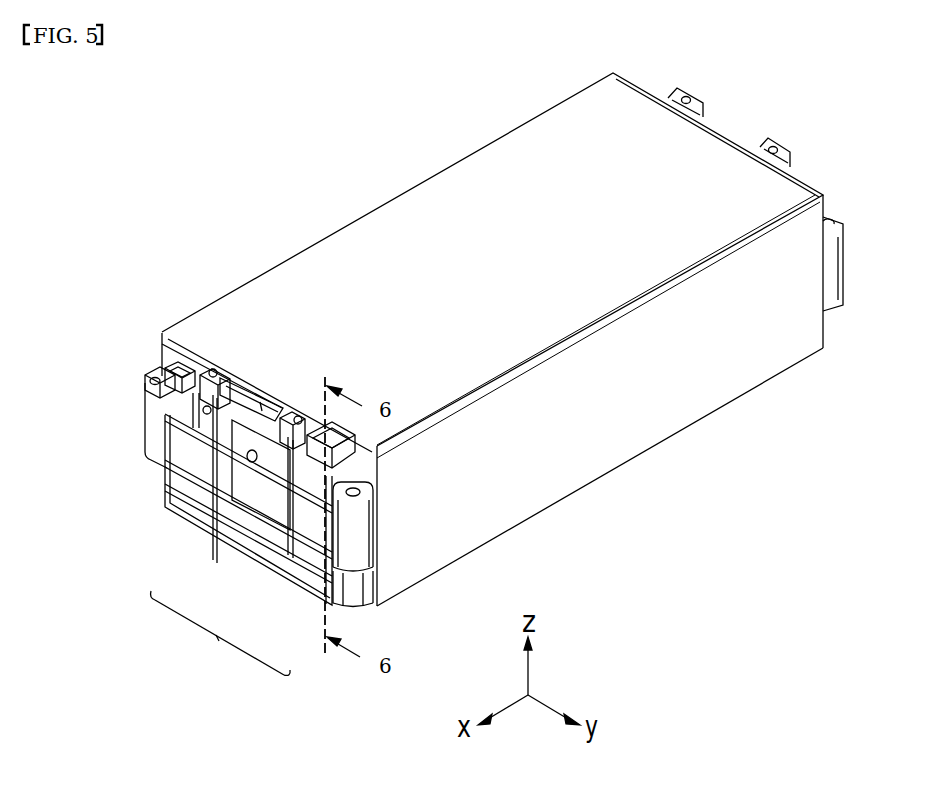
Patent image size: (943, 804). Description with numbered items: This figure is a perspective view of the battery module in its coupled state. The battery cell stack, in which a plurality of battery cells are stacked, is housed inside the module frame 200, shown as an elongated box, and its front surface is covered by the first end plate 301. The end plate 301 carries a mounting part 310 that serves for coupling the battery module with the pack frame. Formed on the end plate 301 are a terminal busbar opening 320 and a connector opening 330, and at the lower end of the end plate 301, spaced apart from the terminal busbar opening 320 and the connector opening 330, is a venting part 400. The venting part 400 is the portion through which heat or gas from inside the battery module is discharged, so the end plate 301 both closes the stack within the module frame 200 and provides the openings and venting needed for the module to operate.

The module frame 200 is at (428, 204).
The venting part 400 is at (198, 505).
The first end plate 301 is at (221, 633).
The mounting part 310 is at (337, 537).
The terminal busbar opening 320 is at (182, 393).
The connector opening 330 is at (262, 402).